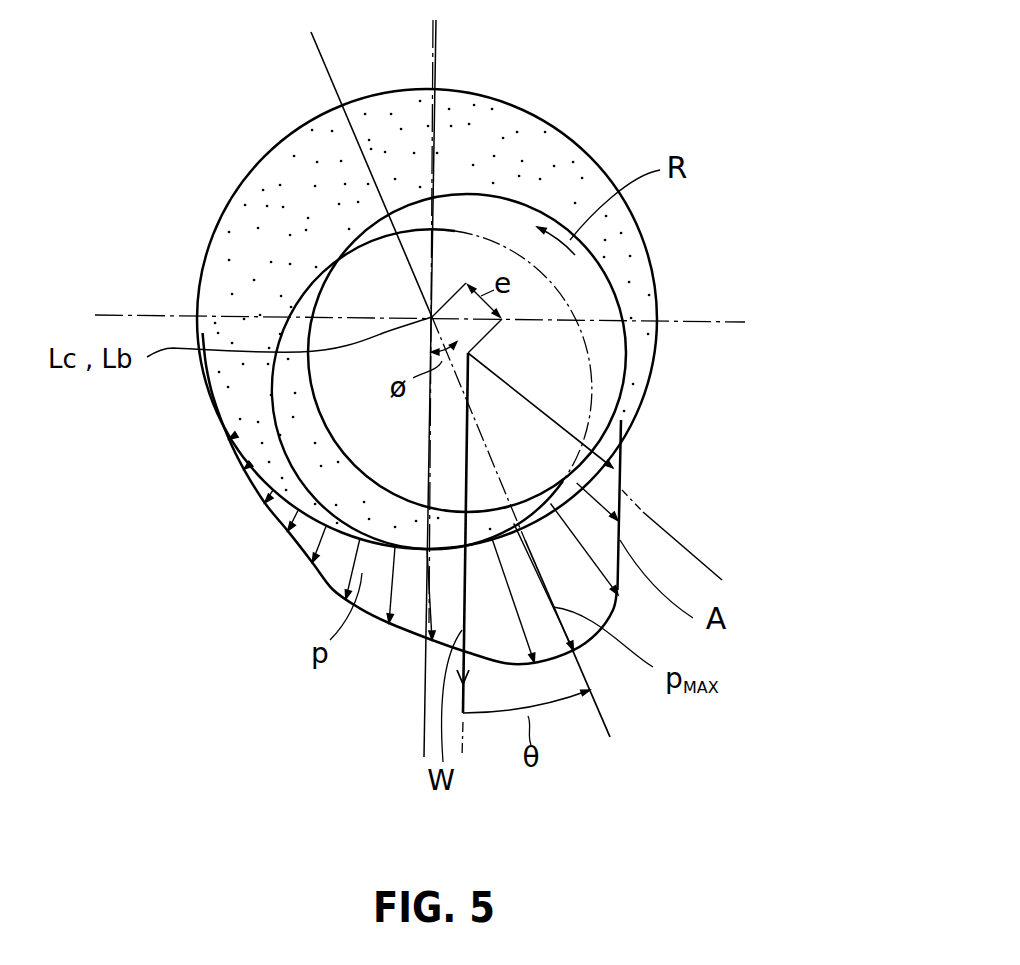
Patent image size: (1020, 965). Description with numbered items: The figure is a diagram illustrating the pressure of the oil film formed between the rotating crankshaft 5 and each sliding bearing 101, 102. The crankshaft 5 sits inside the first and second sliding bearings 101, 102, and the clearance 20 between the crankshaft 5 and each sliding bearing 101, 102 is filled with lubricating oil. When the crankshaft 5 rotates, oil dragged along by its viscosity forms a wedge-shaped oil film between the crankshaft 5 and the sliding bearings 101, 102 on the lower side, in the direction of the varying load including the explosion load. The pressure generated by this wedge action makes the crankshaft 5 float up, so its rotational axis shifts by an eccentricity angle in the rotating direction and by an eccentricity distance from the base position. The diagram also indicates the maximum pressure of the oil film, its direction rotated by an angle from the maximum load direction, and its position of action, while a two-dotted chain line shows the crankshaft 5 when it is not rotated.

The crankshaft 5 is at (268, 383).
The first sliding bearing 101 is at (660, 288).
The second sliding bearing 102 is at (427, 434).
The clearance 20 is at (512, 130).